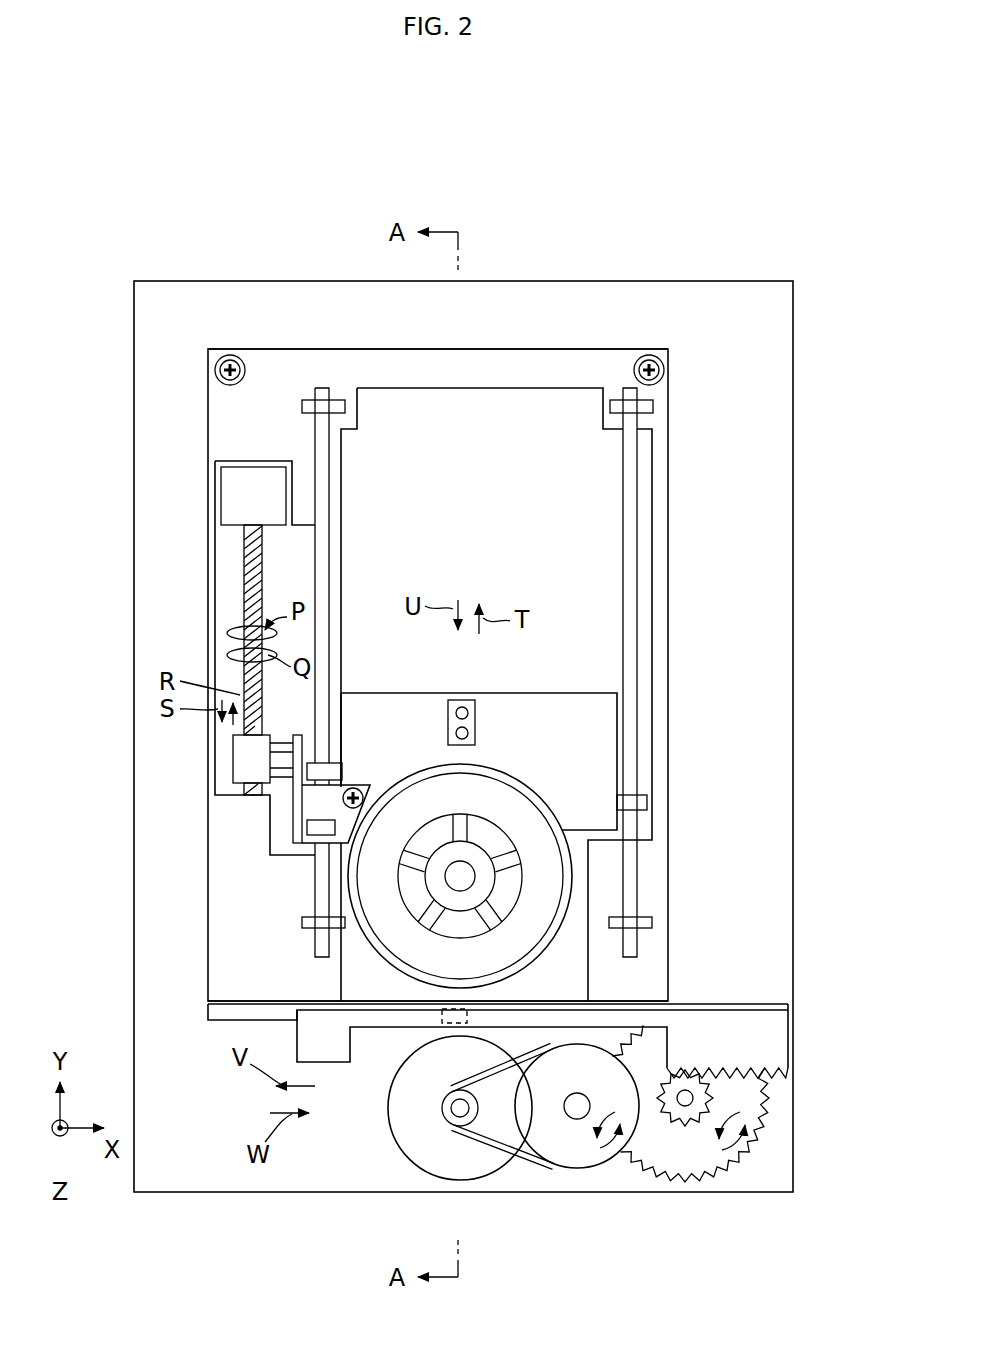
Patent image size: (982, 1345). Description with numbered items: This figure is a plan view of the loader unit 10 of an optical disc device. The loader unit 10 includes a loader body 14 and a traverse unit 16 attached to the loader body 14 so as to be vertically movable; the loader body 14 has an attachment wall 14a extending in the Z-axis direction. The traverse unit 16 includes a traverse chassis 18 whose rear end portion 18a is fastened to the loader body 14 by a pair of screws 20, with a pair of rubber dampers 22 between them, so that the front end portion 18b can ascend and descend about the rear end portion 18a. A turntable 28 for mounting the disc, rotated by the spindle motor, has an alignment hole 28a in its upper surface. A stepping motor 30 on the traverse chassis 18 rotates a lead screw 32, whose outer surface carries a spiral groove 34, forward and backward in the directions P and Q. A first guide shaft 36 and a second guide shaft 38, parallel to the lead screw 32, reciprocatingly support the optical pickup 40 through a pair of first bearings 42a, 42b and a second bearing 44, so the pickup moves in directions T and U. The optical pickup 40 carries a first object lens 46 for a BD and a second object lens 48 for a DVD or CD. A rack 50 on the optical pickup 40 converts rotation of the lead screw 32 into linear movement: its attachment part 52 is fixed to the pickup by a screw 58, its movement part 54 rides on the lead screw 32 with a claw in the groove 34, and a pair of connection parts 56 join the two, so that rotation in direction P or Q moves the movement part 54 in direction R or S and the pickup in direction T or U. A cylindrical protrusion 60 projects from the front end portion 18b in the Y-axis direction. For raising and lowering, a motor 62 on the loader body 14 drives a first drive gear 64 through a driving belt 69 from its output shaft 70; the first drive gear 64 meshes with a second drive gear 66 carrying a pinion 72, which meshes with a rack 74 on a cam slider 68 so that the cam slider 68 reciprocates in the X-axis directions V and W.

The loader unit 10 is at (690, 262).
The loader body 14 is at (788, 357).
The attachment wall 14a is at (262, 1012).
The traverse unit 16 is at (594, 346).
The traverse chassis 18 is at (660, 583).
The rear end portion 18a is at (468, 362).
The front end portion 18b is at (235, 998).
The screws 20 is at (218, 370).
The dampers 22 is at (237, 356).
The turntable 28 is at (520, 940).
The hole 28a is at (463, 880).
The stepping motor 30 is at (232, 500).
The lead screw 32 is at (240, 610).
The groove 34 is at (252, 570).
The first guide shaft 36 is at (318, 880).
The second guide shaft 38 is at (633, 875).
The optical pickup 40 is at (548, 703).
The first bearing 42a is at (333, 768).
The first bearing 42b is at (318, 828).
The second bearing 44 is at (633, 803).
The first object lens 46 is at (464, 708).
The second object lens 48 is at (468, 733).
The rack 50 is at (228, 749).
The attachment part 52 is at (305, 808).
The movement part 54 is at (250, 772).
The connection parts 56 is at (281, 773).
The screw 58 is at (357, 789).
The protrusion 60 is at (438, 1020).
The motor 62 is at (410, 1140).
The first drive gear 64 is at (577, 1148).
The second drive gear 66 is at (695, 1160).
The cam slider 68 is at (740, 1015).
The driving belt 69 is at (500, 1150).
The output shaft 70 is at (455, 1115).
The pinion 72 is at (710, 1100).
The rack 74 is at (745, 1080).